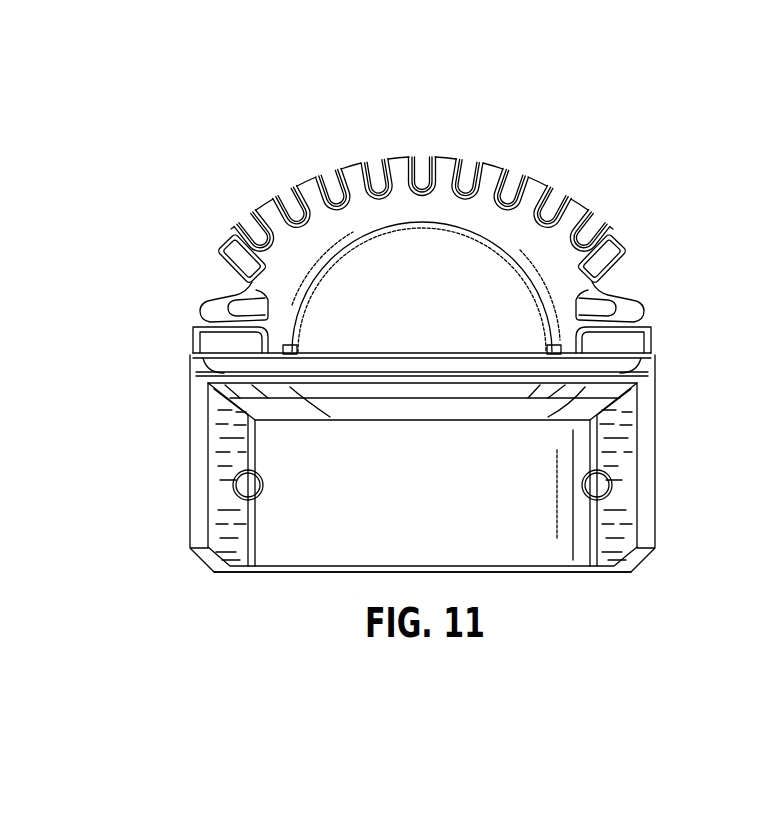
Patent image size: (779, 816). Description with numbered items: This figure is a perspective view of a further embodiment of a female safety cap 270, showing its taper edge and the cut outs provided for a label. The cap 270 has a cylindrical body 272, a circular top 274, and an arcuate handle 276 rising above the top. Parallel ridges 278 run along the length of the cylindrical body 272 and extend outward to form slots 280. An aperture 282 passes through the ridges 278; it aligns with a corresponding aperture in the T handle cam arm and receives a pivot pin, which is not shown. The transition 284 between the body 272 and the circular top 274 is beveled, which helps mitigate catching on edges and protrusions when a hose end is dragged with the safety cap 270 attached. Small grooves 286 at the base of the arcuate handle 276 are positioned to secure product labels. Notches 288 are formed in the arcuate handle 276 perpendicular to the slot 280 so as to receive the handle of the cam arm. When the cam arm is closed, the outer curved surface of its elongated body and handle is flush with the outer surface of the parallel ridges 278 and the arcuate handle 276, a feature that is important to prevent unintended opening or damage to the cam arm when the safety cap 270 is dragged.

The female safety cap 270 is at (222, 150).
The cylindrical body 272 is at (310, 574).
The circular top 274 is at (400, 355).
The arcuate handle 276 is at (568, 202).
The parallel ridges 278 is at (192, 452).
The slots 280 is at (180, 500).
The aperture 282 is at (256, 494).
The transition 284 is at (360, 408).
The small grooves 286 is at (294, 353).
The notches 288 is at (228, 250).